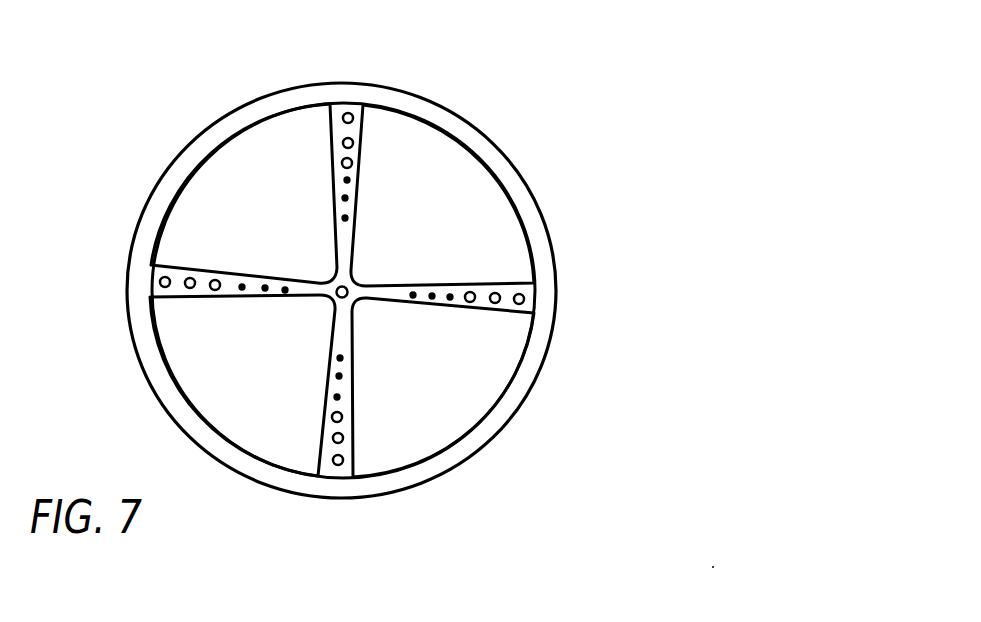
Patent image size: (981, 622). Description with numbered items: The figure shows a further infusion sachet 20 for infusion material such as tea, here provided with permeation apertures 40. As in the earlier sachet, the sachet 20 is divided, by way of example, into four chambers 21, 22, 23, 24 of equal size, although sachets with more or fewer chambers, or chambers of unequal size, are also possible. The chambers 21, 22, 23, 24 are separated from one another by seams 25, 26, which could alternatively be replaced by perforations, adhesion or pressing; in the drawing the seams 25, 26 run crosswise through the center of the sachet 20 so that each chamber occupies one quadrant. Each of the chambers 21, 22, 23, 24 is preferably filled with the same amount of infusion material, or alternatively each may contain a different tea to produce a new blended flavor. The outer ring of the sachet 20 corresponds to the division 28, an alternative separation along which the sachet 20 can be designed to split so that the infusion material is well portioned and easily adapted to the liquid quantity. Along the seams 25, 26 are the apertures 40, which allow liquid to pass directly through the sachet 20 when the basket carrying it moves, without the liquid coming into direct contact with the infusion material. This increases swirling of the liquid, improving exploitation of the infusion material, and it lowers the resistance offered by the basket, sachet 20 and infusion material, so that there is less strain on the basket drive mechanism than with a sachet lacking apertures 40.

The sachet 20 is at (545, 160).
The chamber 21 is at (417, 173).
The chamber 22 is at (457, 405).
The chamber 23 is at (208, 373).
The chamber 24 is at (220, 180).
The seam 25 is at (507, 313).
The seam 26 is at (356, 128).
The division 28 is at (465, 133).
The apertures 40 is at (525, 295).